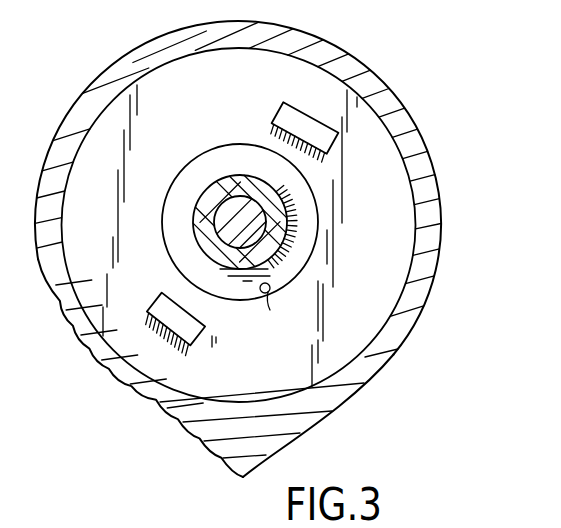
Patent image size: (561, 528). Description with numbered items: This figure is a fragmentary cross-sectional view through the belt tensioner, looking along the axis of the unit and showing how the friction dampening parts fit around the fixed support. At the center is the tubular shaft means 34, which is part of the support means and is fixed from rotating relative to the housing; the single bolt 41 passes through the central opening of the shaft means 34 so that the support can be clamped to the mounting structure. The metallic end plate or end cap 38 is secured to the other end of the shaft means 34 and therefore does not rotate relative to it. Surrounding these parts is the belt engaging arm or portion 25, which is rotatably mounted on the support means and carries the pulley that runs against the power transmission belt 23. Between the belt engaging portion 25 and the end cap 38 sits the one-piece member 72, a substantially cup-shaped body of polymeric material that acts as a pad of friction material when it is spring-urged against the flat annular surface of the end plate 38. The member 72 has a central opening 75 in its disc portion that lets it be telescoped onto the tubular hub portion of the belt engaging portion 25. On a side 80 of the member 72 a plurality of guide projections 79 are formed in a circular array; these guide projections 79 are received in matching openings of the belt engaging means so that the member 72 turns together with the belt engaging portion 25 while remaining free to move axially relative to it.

The belt engaging arm or portion 25 is at (312, 47).
The one-piece member 72 is at (203, 112).
The side of the member 80 is at (368, 145).
The guide projections 79 is at (292, 117).
The end plate or end cap 38 is at (303, 228).
The bolt 41 is at (224, 214).
The tubular shaft means 34 is at (206, 244).
The central opening 75 is at (269, 319).
The power transmission belt 23 is at (16, 419).